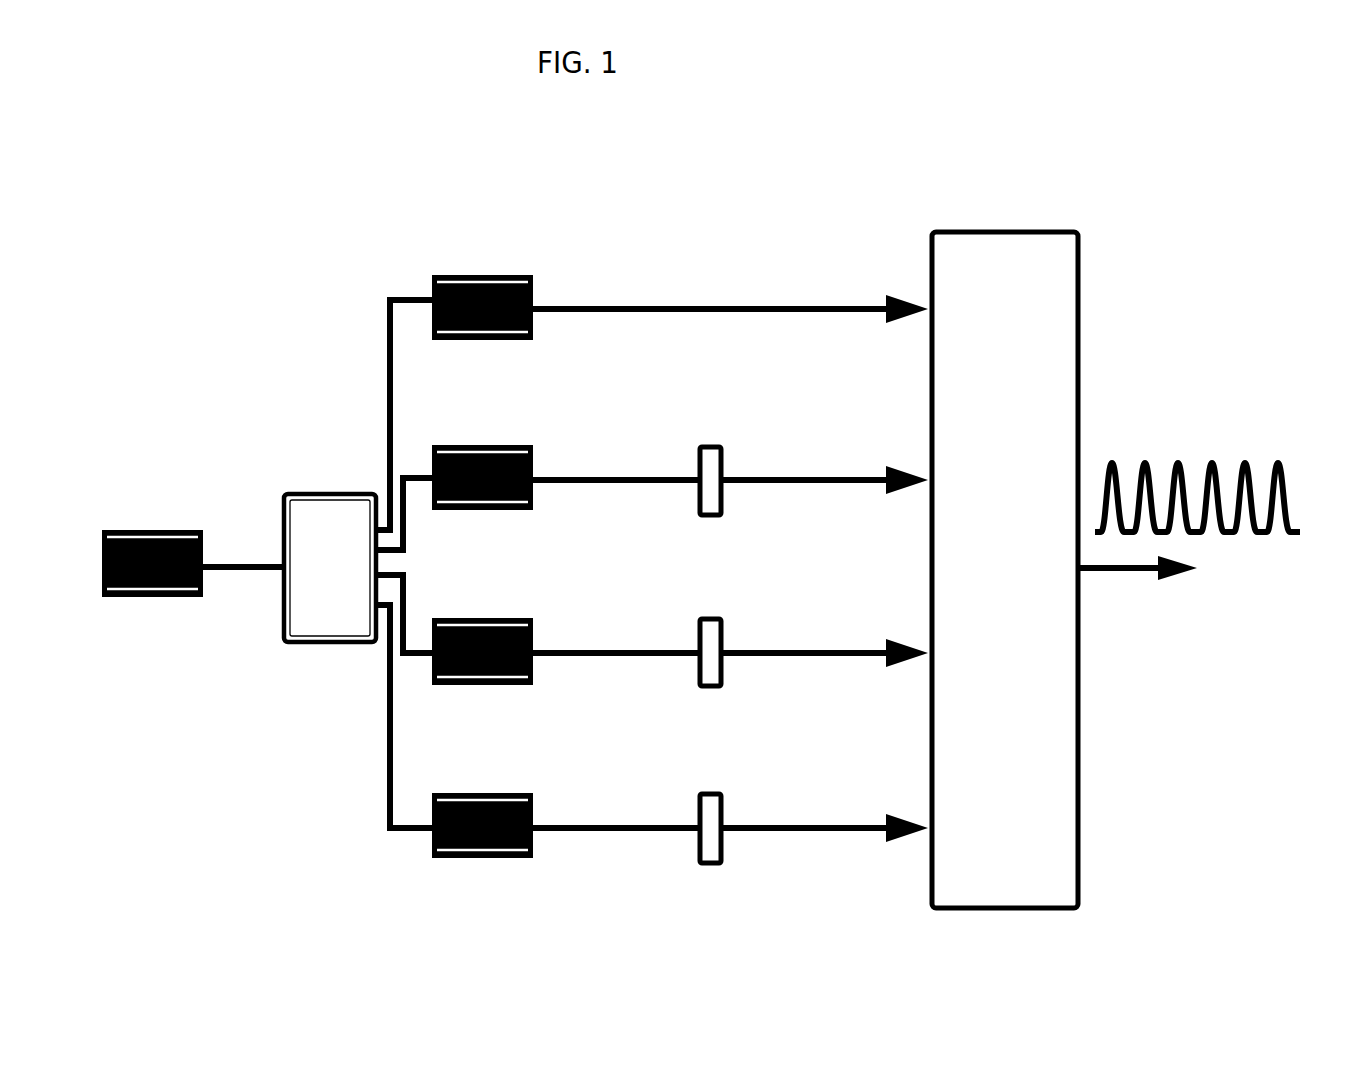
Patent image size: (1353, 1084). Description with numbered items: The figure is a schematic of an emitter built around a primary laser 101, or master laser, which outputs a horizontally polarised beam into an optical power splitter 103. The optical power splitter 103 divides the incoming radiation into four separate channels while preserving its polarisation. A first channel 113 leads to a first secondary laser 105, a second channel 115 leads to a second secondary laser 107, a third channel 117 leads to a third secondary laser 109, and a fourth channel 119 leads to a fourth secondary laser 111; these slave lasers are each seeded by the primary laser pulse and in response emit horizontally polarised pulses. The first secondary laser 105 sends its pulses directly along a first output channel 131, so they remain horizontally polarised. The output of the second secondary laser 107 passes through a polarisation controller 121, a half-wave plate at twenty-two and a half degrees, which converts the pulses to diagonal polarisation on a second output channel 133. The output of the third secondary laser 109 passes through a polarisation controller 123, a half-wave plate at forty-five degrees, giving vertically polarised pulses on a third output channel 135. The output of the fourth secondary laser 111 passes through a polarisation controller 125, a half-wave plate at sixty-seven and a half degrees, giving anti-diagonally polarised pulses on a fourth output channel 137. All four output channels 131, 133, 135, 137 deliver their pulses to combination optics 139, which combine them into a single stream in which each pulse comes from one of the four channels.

The primary laser 101 is at (133, 598).
The optical power splitter 103 is at (330, 590).
The first secondary laser 105 is at (516, 305).
The second secondary laser 107 is at (516, 484).
The third secondary laser 109 is at (516, 656).
The fourth secondary laser 111 is at (516, 835).
The first channel 113 is at (372, 281).
The second channel 115 is at (403, 457).
The third channel 117 is at (403, 676).
The fourth channel 119 is at (372, 807).
The polarisation controller 121 is at (710, 454).
The polarisation controller 123 is at (709, 626).
The polarisation controller 125 is at (709, 820).
The first output channel 131 is at (730, 292).
The second output channel 133 is at (730, 483).
The third output channel 135 is at (730, 653).
The fourth output channel 137 is at (730, 828).
The combination optics 139 is at (1028, 870).